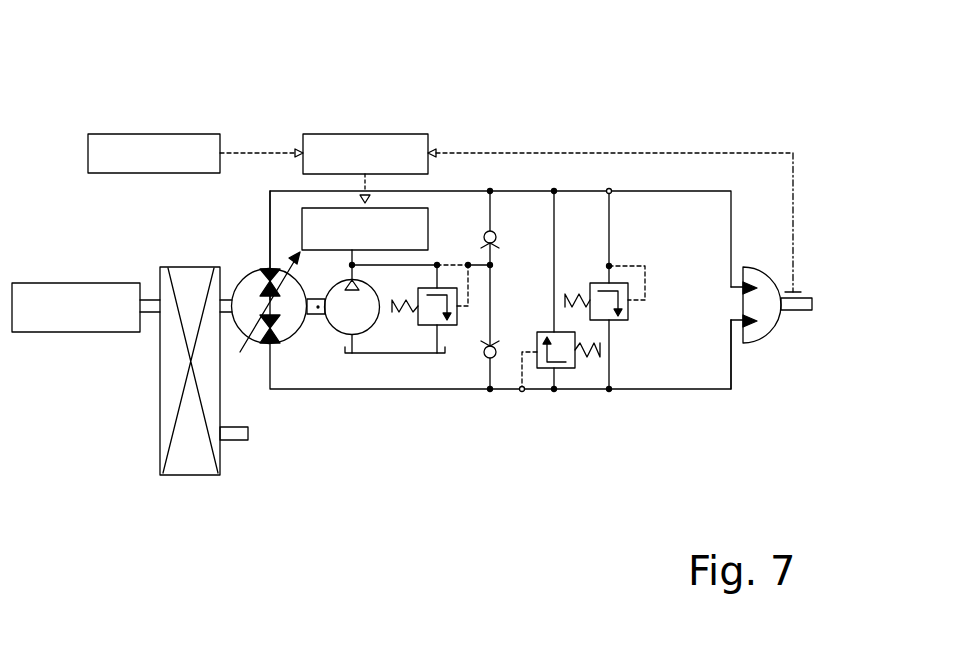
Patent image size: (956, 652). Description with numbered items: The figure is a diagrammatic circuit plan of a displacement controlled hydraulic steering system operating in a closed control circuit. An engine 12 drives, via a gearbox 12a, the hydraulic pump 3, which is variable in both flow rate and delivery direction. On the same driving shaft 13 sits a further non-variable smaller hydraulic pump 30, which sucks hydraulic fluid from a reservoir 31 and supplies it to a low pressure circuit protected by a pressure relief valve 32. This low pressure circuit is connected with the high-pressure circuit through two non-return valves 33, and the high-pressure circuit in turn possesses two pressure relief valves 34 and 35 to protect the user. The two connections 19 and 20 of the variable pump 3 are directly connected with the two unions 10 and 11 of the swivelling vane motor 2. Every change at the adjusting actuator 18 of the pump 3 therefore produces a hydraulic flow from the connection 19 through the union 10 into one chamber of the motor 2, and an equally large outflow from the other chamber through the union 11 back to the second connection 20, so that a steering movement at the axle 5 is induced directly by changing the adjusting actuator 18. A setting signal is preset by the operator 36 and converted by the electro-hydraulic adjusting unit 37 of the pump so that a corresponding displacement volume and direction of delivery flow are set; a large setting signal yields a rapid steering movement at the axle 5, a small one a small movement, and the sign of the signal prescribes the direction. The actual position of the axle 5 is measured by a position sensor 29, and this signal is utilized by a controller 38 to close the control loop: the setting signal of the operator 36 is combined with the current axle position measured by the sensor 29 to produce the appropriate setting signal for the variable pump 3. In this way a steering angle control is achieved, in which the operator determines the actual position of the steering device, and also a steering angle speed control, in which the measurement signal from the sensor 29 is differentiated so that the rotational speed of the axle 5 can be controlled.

The swivelling vane motor 2 is at (775, 330).
The hydraulic pump 3 is at (277, 396).
The axle 5 is at (797, 305).
The union of the swivelling vane motor 10 is at (731, 223).
The union of the swivelling vane motor 11 is at (733, 367).
The engine 12 is at (52, 312).
The gearbox 12a is at (173, 382).
The driving shaft 13 is at (318, 313).
The adjusting actuator 18 is at (297, 252).
The connection of the variable pump 19 is at (268, 232).
The connection of the variable pump 20 is at (271, 355).
The position sensor 29 is at (793, 292).
The non-variable smaller hydraulic pump 30 is at (352, 323).
The reservoir 31 is at (416, 353).
The pressure relief valve 32 is at (456, 327).
The non-return valves 33 is at (492, 345).
The pressure relief valve 34 is at (560, 370).
The pressure relief valve 35 is at (614, 322).
The operator 36 is at (117, 145).
The electro-hydraulic adjusting unit 37 is at (310, 217).
The controller 38 is at (347, 147).